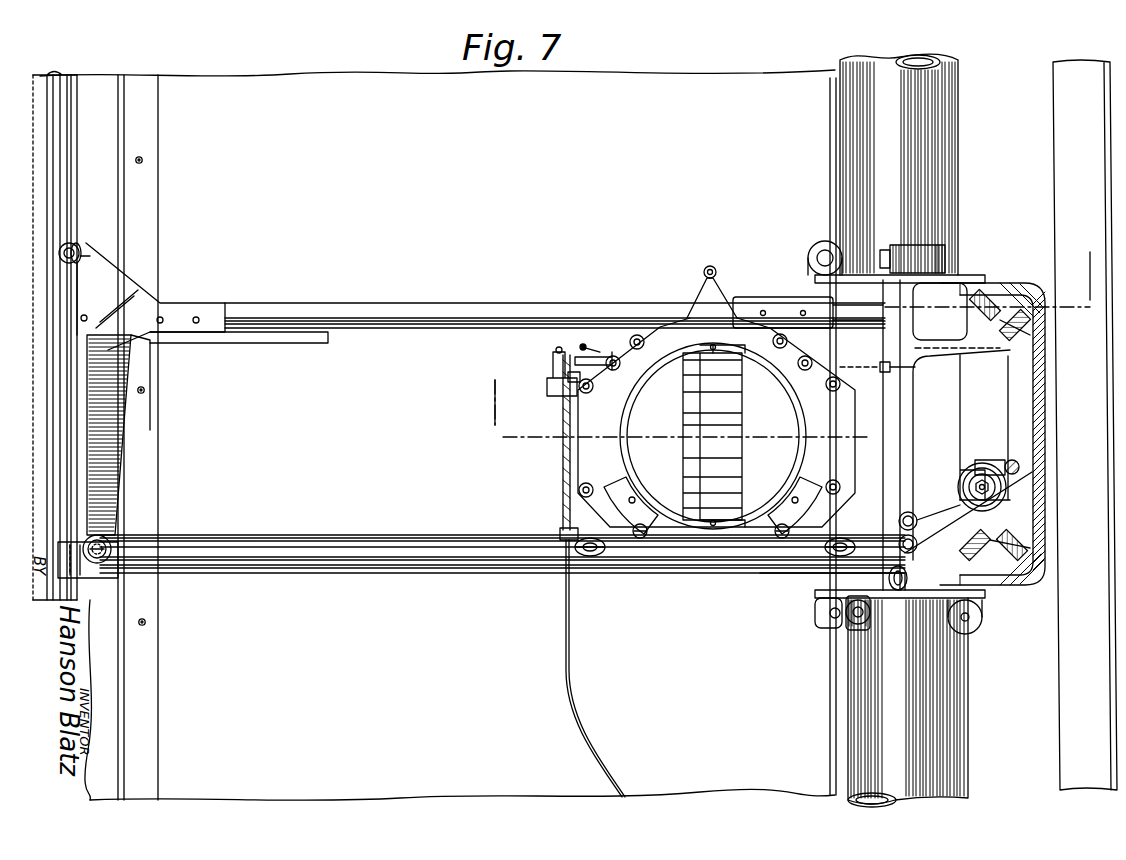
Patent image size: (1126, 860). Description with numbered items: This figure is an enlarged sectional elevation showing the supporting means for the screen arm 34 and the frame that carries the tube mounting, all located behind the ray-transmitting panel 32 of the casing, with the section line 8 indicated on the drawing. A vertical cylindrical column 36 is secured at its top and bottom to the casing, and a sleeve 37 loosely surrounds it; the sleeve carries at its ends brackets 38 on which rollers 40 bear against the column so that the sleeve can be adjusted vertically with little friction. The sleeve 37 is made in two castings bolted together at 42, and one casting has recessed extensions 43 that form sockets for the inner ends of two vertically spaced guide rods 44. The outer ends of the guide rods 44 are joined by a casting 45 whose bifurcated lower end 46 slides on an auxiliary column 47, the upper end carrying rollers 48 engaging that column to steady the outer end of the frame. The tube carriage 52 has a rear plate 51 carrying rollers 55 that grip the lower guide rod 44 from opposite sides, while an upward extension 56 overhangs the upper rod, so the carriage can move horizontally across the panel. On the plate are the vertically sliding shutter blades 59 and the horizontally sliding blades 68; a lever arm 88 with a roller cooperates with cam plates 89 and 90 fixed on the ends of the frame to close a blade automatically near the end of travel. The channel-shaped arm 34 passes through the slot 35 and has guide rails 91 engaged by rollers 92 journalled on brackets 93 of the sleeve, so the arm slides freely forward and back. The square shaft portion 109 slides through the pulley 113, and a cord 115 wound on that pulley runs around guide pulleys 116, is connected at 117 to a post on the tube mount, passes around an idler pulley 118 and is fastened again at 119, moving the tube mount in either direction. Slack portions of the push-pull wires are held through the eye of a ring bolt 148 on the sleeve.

The section line 8 is at (788, 350).
The panel 32 is at (438, 435).
The arm 34 is at (1038, 398).
The vertically elongated slot 35 is at (962, 207).
The vertical cylindrical column 36 is at (940, 712).
The sleeve 37 is at (962, 412).
The bracket 38 is at (946, 258).
The roller 40 is at (840, 255).
The bolted joint 42 is at (880, 366).
The recessed extension 43 is at (768, 305).
The guide rod 44 is at (512, 303).
The casting 45 is at (105, 450).
The lower end of casting 46 is at (140, 580).
The auxiliary column 47 is at (68, 173).
The roller 48 is at (78, 250).
The rear plate 51 is at (776, 360).
The tube carriage 52 is at (556, 469).
The roller 55 is at (594, 557).
The upward extension 56 is at (728, 300).
The blade 59 is at (683, 380).
The blade 68 is at (713, 468).
The lever arm 88 is at (598, 343).
The cam plate 89 is at (612, 352).
The cam plate 90 is at (292, 341).
The guide rail 91 is at (1015, 292).
The roller 92 is at (1032, 336).
The bracket 93 is at (945, 362).
The main portion of shaft 109 is at (970, 490).
The pulley 113 is at (965, 481).
The cord 115 is at (426, 547).
The guide pulley 116 is at (916, 550).
The connection 117 is at (775, 531).
The idler pulley 118 is at (102, 580).
The fastening 119 is at (645, 524).
The ring bolt 148 is at (898, 600).